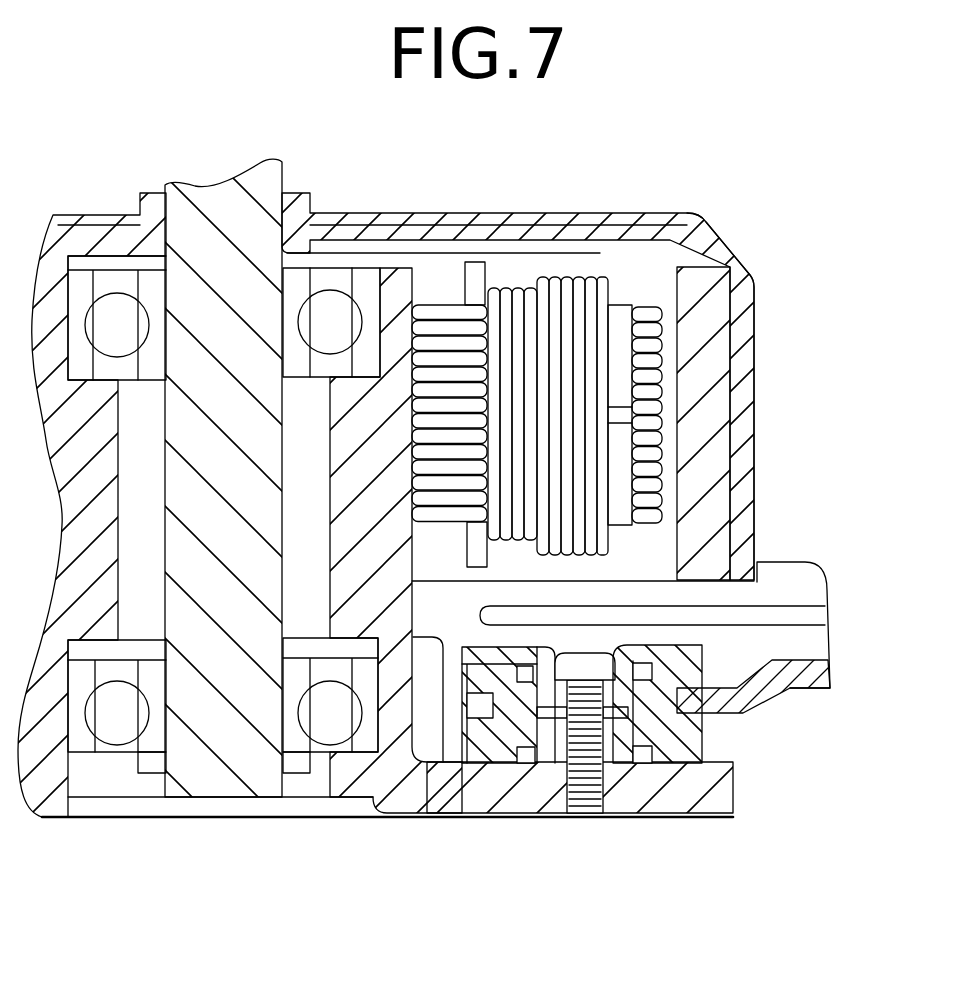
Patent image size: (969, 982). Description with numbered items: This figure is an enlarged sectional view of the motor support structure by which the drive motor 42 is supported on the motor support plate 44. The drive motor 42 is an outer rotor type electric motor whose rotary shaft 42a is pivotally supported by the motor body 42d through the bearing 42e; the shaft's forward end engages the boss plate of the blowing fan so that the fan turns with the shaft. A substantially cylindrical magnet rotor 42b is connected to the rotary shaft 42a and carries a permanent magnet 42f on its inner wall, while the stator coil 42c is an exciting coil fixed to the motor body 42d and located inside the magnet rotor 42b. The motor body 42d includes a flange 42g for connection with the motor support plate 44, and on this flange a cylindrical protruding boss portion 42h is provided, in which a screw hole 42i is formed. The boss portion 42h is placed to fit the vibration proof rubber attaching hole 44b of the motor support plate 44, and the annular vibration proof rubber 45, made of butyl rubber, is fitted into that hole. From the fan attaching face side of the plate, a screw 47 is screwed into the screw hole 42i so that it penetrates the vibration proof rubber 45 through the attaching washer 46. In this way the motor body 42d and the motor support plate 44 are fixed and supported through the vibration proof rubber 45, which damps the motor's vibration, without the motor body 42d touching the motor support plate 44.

The drive motor 42 is at (147, 818).
The rotary shaft 42a is at (233, 740).
The magnet rotor 42b is at (707, 247).
The stator coil 42c is at (579, 290).
The motor body 42d is at (395, 710).
The bearing 42e is at (82, 738).
The permanent magnet 42f is at (710, 383).
The flange 42g is at (640, 780).
The boss portion 42h is at (562, 718).
The screw hole 42i is at (580, 815).
The motor support plate 44 is at (648, 762).
The vibration proof rubber attaching hole 44b is at (710, 720).
The vibration proof rubber 45 is at (707, 718).
The attaching washer 46 is at (707, 640).
The screw 47 is at (585, 665).